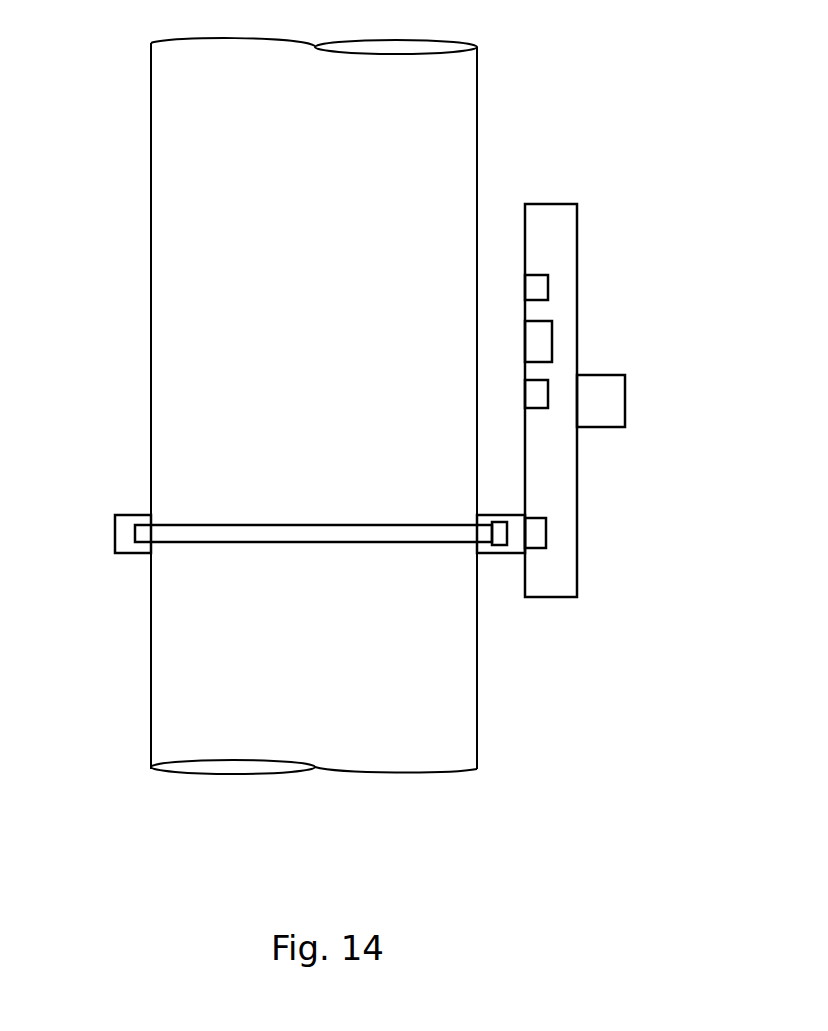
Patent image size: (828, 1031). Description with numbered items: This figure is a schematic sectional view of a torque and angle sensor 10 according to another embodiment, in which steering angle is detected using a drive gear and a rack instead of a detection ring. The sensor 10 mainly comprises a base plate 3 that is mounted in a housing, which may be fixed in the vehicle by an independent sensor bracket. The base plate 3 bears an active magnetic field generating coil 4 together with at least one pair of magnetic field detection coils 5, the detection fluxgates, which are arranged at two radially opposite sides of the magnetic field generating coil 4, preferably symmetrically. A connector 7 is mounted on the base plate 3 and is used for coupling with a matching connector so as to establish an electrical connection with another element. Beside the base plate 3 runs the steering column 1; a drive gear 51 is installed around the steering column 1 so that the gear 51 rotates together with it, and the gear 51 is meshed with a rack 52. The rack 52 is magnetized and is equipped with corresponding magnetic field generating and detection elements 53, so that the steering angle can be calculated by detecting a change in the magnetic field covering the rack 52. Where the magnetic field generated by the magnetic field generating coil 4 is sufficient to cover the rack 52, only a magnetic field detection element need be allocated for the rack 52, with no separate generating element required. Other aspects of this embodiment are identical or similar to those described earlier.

The steering column 1 is at (150, 145).
The torque and angle sensor 10 is at (402, 376).
The base plate 3 is at (572, 483).
The magnetic field generating coil 4 is at (545, 342).
The magnetic field detection coil 5 is at (540, 288).
The connector 7 is at (615, 410).
The drive gear 51 is at (362, 543).
The rack 52 is at (499, 545).
The magnetic field generating and detection elements 53 is at (541, 533).